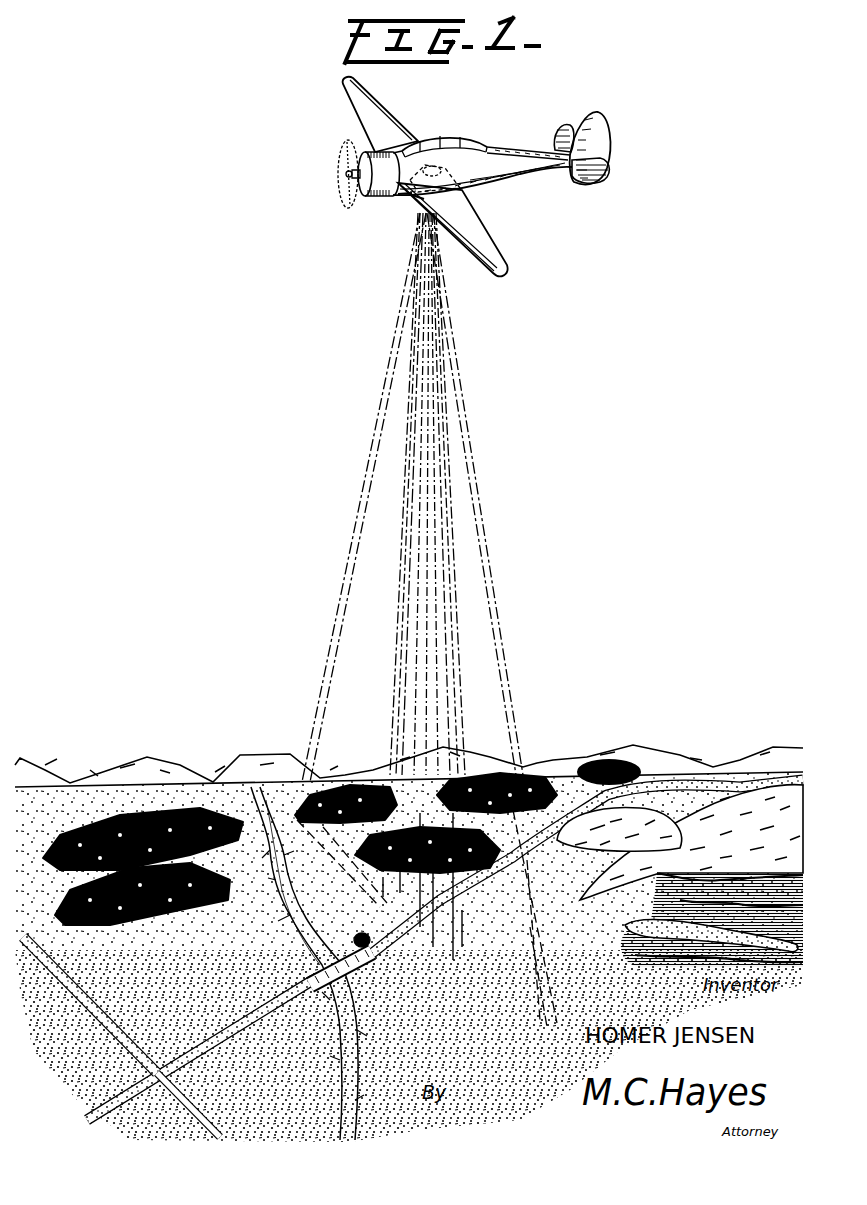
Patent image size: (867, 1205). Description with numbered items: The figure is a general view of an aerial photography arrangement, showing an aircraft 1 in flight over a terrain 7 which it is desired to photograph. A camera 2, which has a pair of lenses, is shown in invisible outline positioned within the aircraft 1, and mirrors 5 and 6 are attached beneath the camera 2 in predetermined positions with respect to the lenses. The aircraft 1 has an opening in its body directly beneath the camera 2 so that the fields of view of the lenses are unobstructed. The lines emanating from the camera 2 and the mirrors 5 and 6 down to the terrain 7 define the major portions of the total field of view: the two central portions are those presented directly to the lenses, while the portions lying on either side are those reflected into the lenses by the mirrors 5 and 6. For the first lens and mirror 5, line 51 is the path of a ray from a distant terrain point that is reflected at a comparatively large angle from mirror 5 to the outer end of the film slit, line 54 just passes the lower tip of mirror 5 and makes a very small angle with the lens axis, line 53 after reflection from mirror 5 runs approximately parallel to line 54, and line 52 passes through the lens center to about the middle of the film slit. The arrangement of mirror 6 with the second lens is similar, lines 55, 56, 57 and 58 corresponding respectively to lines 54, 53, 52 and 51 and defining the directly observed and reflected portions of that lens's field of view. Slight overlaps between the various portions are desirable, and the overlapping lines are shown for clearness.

The aircraft 1 is at (494, 145).
The camera 2 is at (498, 184).
The mirror 5 is at (400, 197).
The mirror 6 is at (415, 201).
The terrain 7 is at (536, 765).
The line 51 is at (326, 669).
The line 52 is at (393, 702).
The line 53 is at (389, 734).
The line 54 is at (462, 642).
The line 55 is at (456, 645).
The line 56 is at (463, 753).
The line 57 is at (462, 729).
The line 58 is at (506, 700).